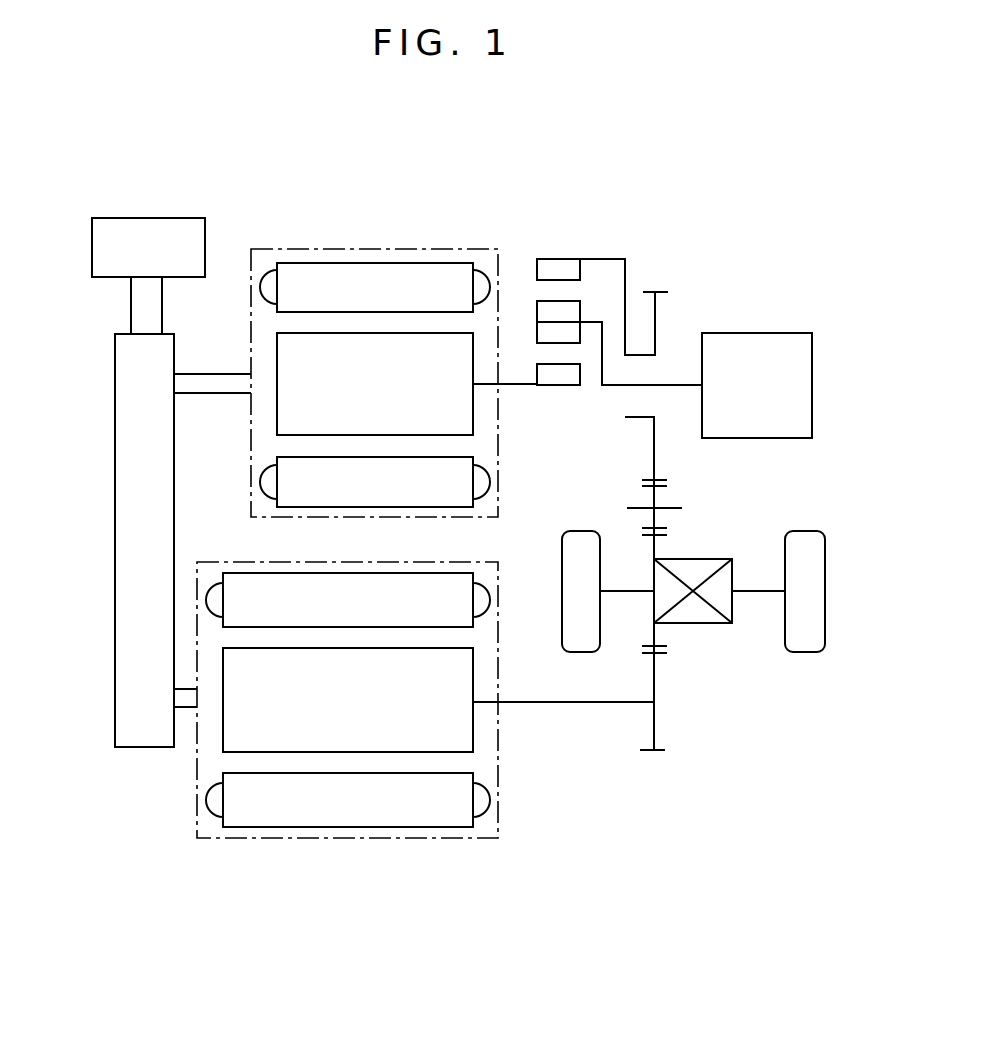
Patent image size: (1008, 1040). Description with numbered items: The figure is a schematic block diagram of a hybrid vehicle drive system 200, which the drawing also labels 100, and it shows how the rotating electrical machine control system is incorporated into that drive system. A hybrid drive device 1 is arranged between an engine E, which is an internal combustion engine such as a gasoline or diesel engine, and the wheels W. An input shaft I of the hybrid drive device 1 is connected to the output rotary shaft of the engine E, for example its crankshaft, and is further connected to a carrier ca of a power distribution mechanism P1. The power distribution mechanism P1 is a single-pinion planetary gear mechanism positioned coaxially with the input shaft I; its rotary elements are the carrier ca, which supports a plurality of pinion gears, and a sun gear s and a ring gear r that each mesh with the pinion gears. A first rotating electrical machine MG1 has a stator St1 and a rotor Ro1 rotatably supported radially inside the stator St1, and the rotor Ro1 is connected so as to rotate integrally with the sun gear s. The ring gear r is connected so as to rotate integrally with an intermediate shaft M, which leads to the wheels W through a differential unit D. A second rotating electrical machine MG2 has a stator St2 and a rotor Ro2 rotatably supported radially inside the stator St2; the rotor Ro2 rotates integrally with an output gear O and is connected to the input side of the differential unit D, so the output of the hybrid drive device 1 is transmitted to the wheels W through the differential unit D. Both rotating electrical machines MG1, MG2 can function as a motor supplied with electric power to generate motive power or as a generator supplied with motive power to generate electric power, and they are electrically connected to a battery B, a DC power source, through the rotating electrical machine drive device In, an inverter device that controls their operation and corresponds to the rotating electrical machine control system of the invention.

The hybrid drive device 1 is at (568, 798).
The battery B is at (128, 218).
The rotating electrical machine drive device In is at (144, 540).
The vehicle drive system 200 is at (232, 232).
The hybrid drive device 100 is at (511, 530).
The first rotating electrical machine MG1 is at (408, 368).
The stator St1 is at (400, 270).
The rotor Ro1 is at (467, 413).
The second rotating electrical machine MG2 is at (385, 724).
The stator St2 is at (315, 585).
The rotor Ro2 is at (466, 695).
The power distribution mechanism P1 is at (587, 300).
The ring gear r is at (562, 268).
The carrier ca is at (603, 333).
The sun gear s is at (545, 380).
The engine E is at (778, 333).
The input shaft I is at (670, 385).
The intermediate shaft M is at (640, 420).
The output gear O is at (654, 727).
The differential unit D is at (735, 628).
The wheels W is at (562, 548).